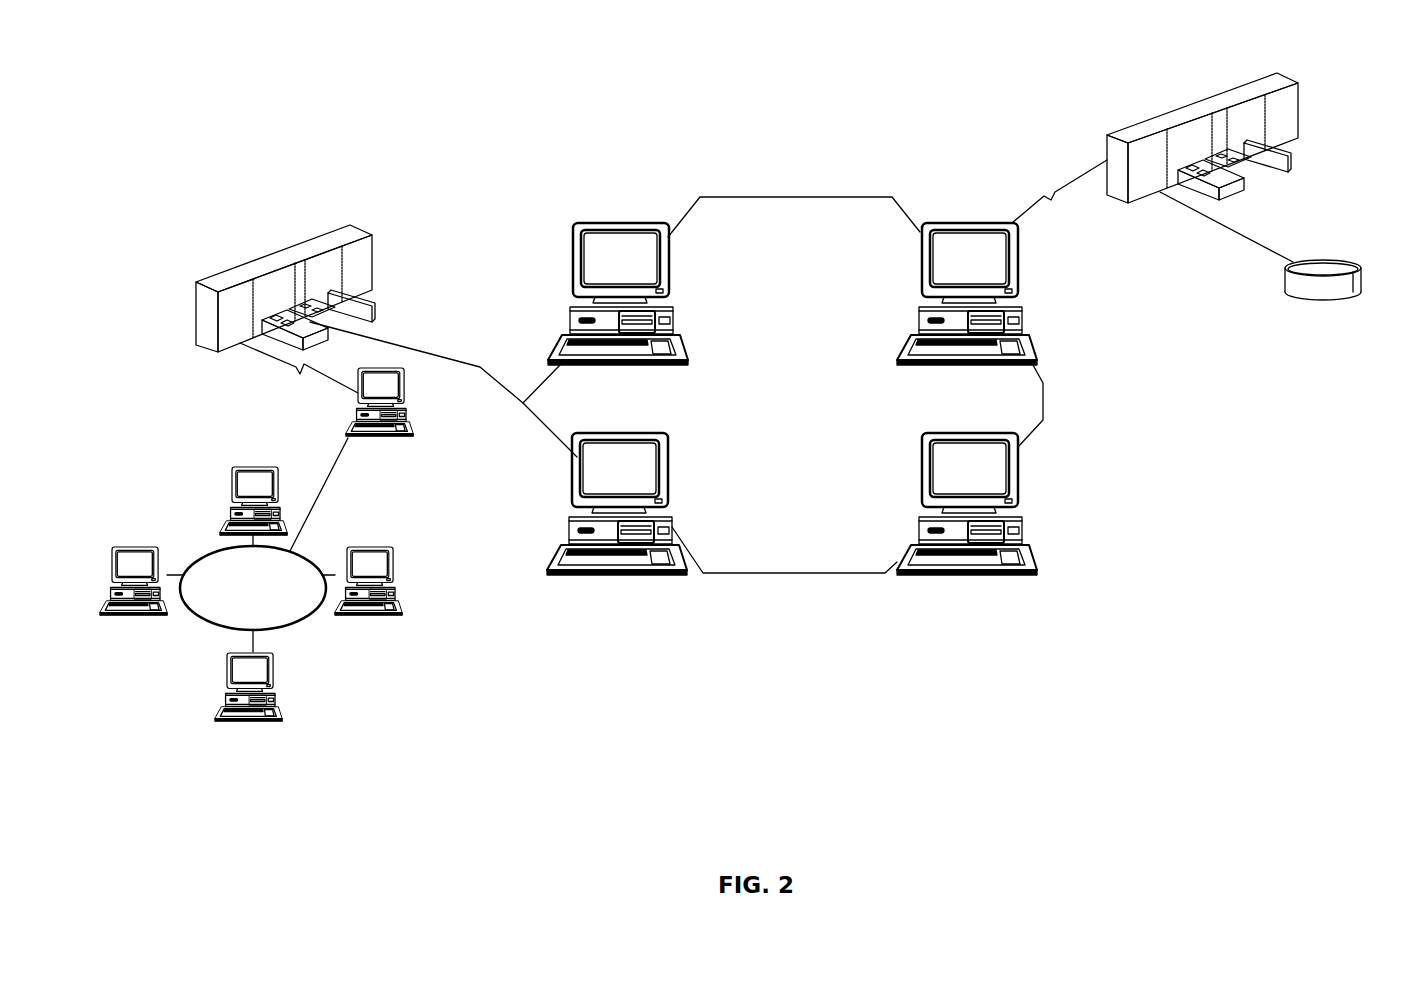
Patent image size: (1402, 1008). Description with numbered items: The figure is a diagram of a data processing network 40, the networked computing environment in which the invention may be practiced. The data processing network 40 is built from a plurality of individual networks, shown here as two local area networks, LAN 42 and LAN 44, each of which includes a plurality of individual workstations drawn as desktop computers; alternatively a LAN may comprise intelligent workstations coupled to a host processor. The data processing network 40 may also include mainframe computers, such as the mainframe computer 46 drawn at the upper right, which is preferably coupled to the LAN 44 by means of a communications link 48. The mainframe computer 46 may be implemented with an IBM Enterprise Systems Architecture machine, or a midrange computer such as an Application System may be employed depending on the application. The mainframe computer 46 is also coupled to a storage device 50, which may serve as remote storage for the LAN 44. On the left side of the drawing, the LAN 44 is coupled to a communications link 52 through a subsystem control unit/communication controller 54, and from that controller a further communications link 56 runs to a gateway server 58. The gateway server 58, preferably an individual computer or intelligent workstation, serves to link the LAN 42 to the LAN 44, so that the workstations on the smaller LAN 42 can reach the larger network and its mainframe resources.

The data processing network 40 is at (830, 190).
The LAN 42 is at (251, 603).
The LAN 44 is at (795, 424).
The mainframe computer 46 is at (1190, 102).
The communications link 48 is at (1088, 170).
The storage device 50 is at (1316, 261).
The communications link 52 is at (396, 331).
The subsystem control unit/communication controller 54 is at (284, 243).
The communications link 56 is at (285, 368).
The gateway server 58 is at (406, 392).